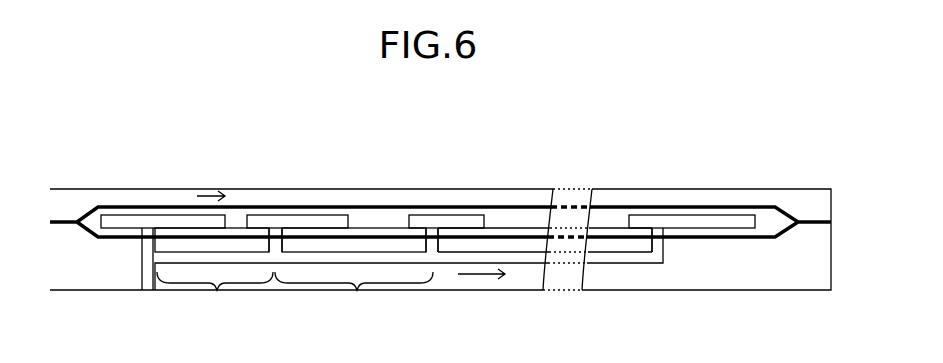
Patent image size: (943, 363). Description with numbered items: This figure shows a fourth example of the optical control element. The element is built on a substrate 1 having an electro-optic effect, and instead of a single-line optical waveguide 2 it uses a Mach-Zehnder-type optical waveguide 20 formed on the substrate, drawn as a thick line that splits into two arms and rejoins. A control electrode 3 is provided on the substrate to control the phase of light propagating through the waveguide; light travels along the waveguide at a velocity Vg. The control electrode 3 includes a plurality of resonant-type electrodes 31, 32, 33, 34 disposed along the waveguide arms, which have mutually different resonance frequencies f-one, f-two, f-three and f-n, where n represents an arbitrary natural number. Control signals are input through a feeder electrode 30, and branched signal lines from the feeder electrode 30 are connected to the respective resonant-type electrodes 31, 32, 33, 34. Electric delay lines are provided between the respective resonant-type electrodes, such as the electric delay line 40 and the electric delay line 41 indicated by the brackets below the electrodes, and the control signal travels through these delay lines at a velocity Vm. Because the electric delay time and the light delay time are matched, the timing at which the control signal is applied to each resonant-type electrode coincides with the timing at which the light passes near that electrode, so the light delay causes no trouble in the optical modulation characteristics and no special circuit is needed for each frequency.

The substrate 1 is at (70, 277).
The optical waveguide 2 is at (67, 221).
The control electrode 3 is at (136, 270).
The Mach-Zehnder-type optical waveguide 20 is at (749, 191).
The feeder electrode 30 is at (147, 290).
The resonant-type electrode 31 is at (163, 220).
The resonant-type electrode 32 is at (277, 218).
The resonant-type electrode 33 is at (432, 220).
The resonant-type electrode 34 is at (657, 220).
The electric delay line 40 is at (215, 292).
The electric delay line 41 is at (355, 292).